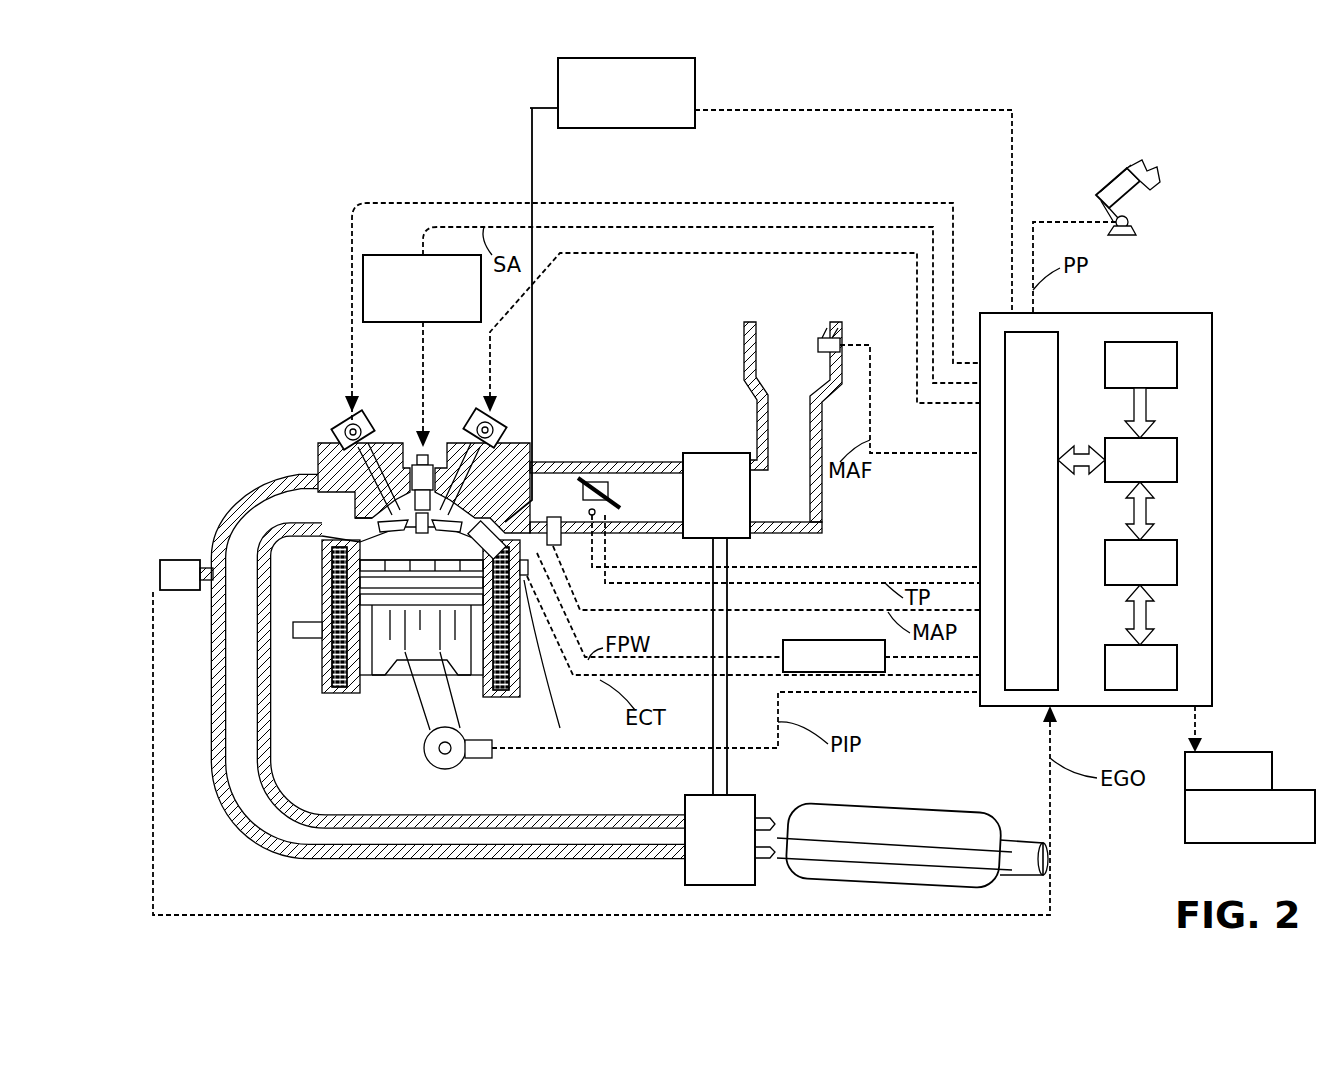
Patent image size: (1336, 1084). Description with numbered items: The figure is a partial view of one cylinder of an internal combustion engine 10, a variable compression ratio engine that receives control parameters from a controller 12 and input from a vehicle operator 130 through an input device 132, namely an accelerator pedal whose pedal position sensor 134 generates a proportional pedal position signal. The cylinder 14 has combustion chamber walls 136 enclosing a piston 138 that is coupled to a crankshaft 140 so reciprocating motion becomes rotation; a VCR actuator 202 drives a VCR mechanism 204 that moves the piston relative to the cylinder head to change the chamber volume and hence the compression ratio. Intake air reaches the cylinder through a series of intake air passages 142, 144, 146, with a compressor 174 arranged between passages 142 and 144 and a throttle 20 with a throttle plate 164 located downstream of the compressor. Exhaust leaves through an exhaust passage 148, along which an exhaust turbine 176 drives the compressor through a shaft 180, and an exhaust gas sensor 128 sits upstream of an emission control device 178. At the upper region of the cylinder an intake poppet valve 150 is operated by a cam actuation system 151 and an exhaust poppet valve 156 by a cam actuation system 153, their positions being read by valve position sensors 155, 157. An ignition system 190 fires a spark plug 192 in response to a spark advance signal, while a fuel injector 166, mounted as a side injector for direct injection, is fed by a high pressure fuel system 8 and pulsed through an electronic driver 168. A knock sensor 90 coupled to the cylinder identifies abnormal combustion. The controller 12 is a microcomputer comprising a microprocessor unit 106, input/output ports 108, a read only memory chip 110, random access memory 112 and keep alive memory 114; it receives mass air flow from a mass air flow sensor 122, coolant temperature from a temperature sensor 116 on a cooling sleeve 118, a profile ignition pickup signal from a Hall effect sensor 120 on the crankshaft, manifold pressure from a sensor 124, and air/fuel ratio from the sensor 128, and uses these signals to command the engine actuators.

The internal combustion engine 10 is at (148, 140).
The high pressure fuel system 8 is at (695, 70).
The controller 12 is at (1140, 519).
The cylinder 14 is at (322, 572).
The throttle 20 is at (595, 480).
The knock sensor 90 is at (312, 640).
The microprocessor unit 106 is at (1177, 460).
The input/output ports 108 is at (1058, 345).
The read only memory chip 110 is at (1177, 362).
The random access memory 112 is at (1177, 562).
The keep alive memory 114 is at (1177, 667).
The temperature sensor 116 is at (533, 590).
The cooling sleeve 118 is at (535, 663).
The Hall effect sensor 120 is at (482, 760).
The mass air flow sensor 122 is at (836, 338).
The manifold pressure sensor 124 is at (570, 585).
The exhaust gas sensor 128 is at (160, 568).
The vehicle operator 130 is at (1150, 180).
The input device 132 is at (1098, 193).
The pedal position sensor 134 is at (1130, 226).
The combustion chamber walls 136 is at (360, 690).
The piston 138 is at (405, 650).
The crankshaft 140 is at (428, 768).
The intake air passage 142 is at (793, 427).
The intake air passage 144 is at (606, 497).
The intake air passage 146 is at (553, 494).
The exhaust passage 148 is at (451, 667).
The intake poppet valve 150 is at (442, 468).
The cam actuation system 151 is at (472, 420).
The cam actuation system 153 is at (360, 420).
The valve position sensor 155 is at (498, 448).
The exhaust poppet valve 156 is at (345, 475).
The valve position sensor 157 is at (340, 436).
The throttle plate 164 is at (552, 517).
The fuel injector 166 is at (736, 382).
The electronic driver 168 is at (783, 642).
The compressor 174 is at (702, 453).
The exhaust turbine 176 is at (685, 870).
The emission control device 178 is at (960, 815).
The shaft 180 is at (727, 760).
The ignition system 190 is at (376, 255).
The spark plug 192 is at (410, 468).
The VCR actuator 202 is at (1228, 771).
The VCR mechanism 204 is at (1250, 816).